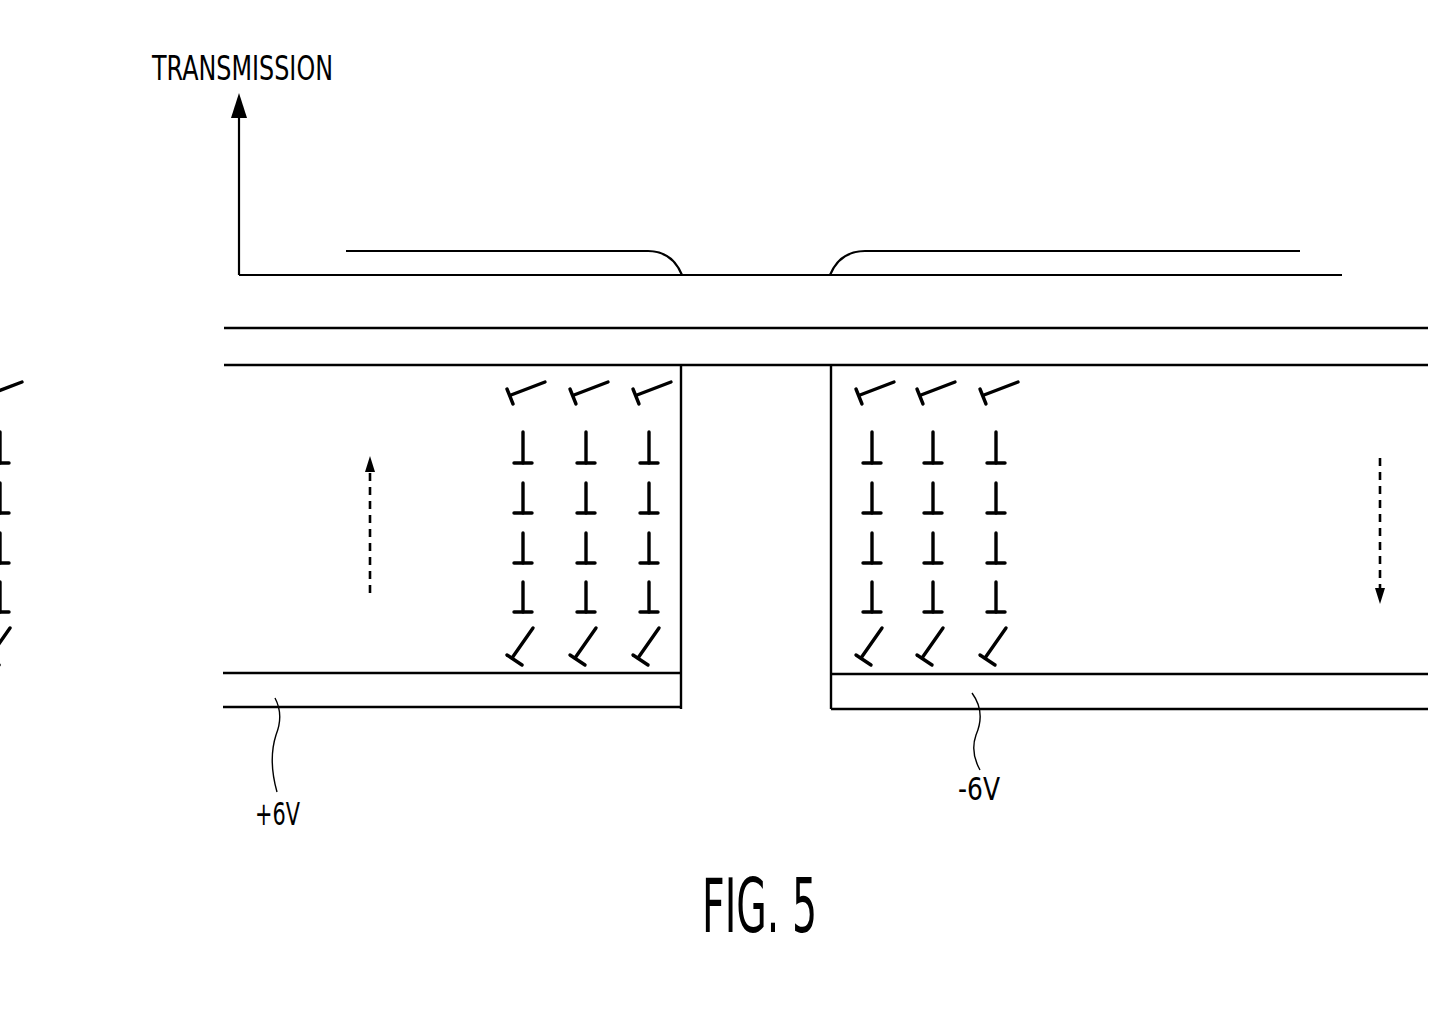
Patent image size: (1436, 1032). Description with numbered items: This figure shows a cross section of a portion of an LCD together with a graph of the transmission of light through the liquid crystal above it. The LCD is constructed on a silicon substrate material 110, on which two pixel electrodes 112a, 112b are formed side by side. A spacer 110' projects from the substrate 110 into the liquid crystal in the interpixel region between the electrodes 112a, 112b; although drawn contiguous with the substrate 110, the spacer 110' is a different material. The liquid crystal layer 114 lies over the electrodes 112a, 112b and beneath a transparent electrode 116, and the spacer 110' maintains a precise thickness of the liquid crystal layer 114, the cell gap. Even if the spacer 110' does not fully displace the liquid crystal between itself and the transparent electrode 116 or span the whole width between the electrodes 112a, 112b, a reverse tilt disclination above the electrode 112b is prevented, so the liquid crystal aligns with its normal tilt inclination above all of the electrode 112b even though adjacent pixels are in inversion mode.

The silicon substrate material 110 is at (755, 771).
The spacer 110' is at (756, 537).
The electrode 112a is at (448, 703).
The electrode 112b is at (1113, 703).
The liquid crystal layer 114 is at (305, 478).
The transparent electrode 116 is at (1336, 338).